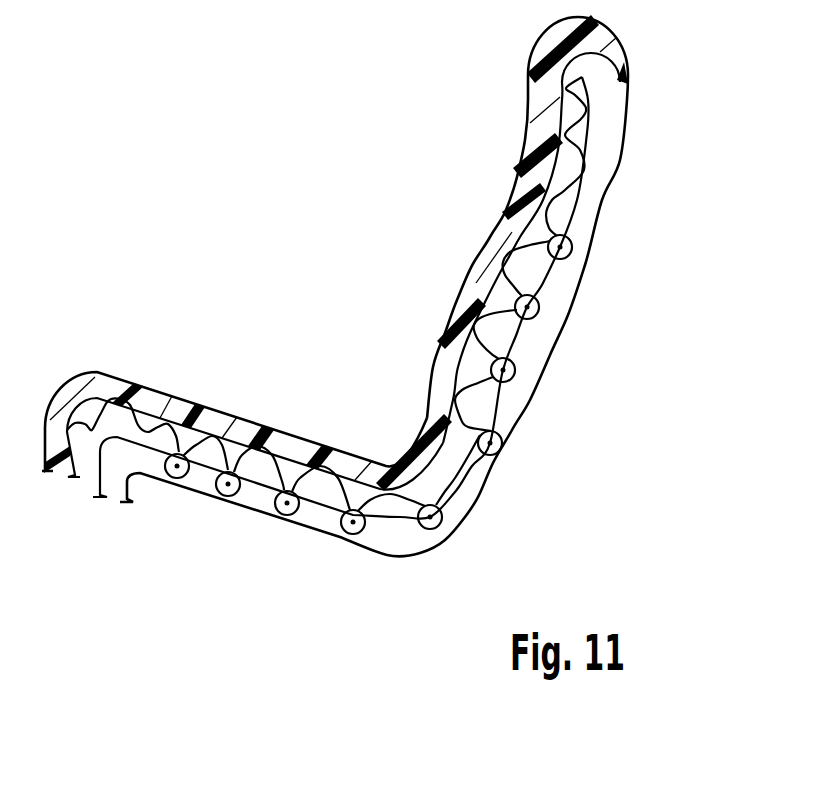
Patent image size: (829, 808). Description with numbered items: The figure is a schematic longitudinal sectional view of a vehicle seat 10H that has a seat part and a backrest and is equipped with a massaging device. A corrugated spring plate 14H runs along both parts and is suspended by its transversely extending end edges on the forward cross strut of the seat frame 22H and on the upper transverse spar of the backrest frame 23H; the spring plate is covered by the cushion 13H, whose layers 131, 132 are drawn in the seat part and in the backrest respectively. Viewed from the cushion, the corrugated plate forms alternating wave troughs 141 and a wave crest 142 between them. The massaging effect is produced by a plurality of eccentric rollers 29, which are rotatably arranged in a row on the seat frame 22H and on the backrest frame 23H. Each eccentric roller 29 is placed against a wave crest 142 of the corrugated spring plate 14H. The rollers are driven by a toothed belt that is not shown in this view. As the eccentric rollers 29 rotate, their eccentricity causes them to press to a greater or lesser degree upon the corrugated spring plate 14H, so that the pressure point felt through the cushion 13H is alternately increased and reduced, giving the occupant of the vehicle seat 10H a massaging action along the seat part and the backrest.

The vehicle seat 10H is at (478, 530).
The cushion 13H is at (303, 422).
The corrugated spring plate 14H is at (528, 216).
The seat frame 22H is at (253, 493).
The backrest frame 23H is at (552, 288).
The eccentric rollers 29 is at (517, 372).
The seat spring wire 131 is at (232, 435).
The backrest spring wire 132 is at (482, 270).
The wave troughs 141 is at (483, 357).
The wave crest 142 is at (490, 348).